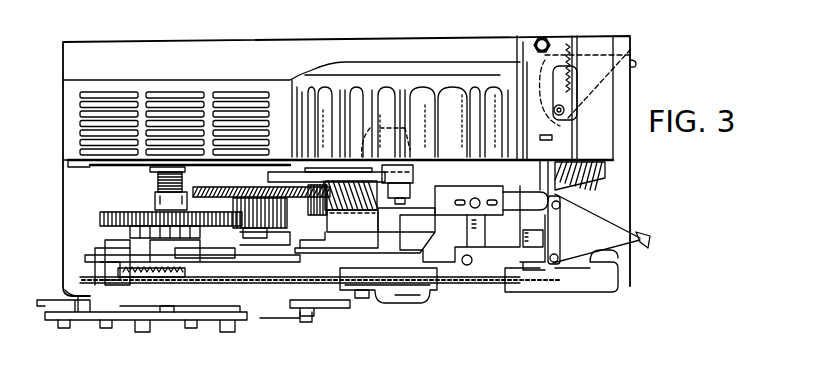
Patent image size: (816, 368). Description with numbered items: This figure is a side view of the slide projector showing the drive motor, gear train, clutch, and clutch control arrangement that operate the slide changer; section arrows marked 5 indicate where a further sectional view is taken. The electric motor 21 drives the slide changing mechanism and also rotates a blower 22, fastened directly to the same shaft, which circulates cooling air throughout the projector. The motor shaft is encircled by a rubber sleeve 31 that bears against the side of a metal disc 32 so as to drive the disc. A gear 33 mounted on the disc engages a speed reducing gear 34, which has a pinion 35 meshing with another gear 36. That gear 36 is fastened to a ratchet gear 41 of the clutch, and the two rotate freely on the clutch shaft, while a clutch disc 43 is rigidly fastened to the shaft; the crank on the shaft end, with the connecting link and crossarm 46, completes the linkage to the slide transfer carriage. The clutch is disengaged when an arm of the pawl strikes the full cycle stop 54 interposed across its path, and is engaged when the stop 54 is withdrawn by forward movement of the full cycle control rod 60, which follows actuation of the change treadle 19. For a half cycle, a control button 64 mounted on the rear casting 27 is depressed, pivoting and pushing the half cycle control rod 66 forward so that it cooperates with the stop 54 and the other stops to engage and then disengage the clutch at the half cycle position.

The blower 22 is at (452, 93).
The rear casting 27 is at (610, 36).
The rubber sleeve 31 is at (413, 170).
The ratchet gear 41 is at (148, 232).
The gear 36 is at (120, 216).
The speed reducing gear 34 is at (300, 190).
The pinion 35 is at (270, 228).
The gear 33 is at (313, 208).
The metal disc 32 is at (350, 212).
The change treadle 19 is at (651, 243).
The control button 64 is at (607, 180).
The full cycle control rod 60 is at (494, 286).
The half cycle control rod 66 is at (302, 268).
The electric motor 21 is at (415, 293).
The full cycle stop 54 is at (88, 256).
The crossarm 46 is at (97, 318).
The clutch disc 43 is at (105, 258).
The section line 5 is at (73, 250).